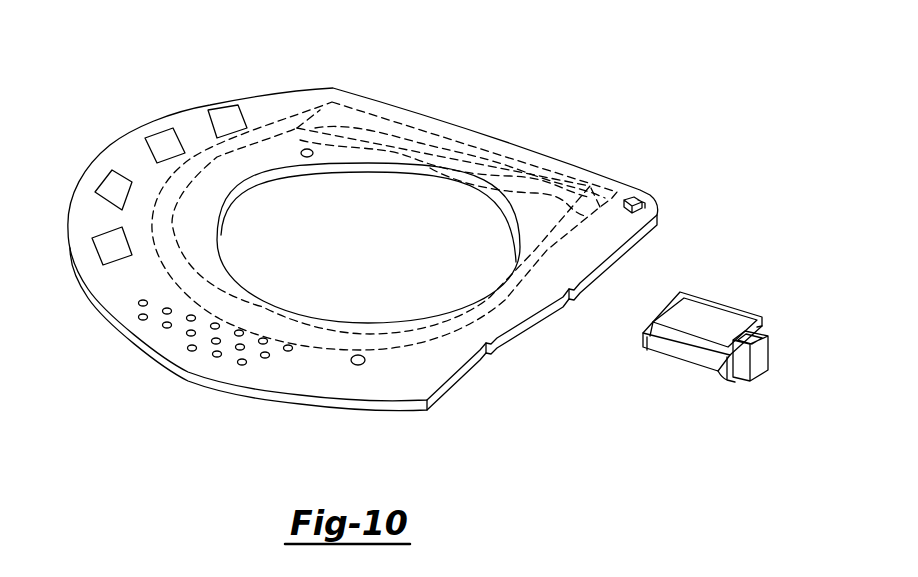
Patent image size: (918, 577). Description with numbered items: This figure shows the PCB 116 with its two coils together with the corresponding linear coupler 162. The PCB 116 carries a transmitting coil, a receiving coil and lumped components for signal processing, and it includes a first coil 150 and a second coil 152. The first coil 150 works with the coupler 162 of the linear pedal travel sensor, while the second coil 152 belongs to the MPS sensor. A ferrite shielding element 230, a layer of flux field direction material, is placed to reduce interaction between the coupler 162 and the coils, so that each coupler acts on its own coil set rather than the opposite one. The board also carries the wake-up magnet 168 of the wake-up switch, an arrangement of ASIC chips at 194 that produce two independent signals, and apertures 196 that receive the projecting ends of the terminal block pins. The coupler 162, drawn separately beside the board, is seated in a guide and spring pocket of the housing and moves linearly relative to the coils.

The PCB 116 is at (408, 378).
The first coil 150 is at (422, 147).
The second coil 152 is at (185, 267).
The coupler 162 is at (712, 312).
The wake-up magnet 168 is at (633, 203).
The arrangement of ASIC chips 194 is at (112, 197).
The apertures 196 is at (288, 348).
The ferrite shielding element 230 is at (533, 188).